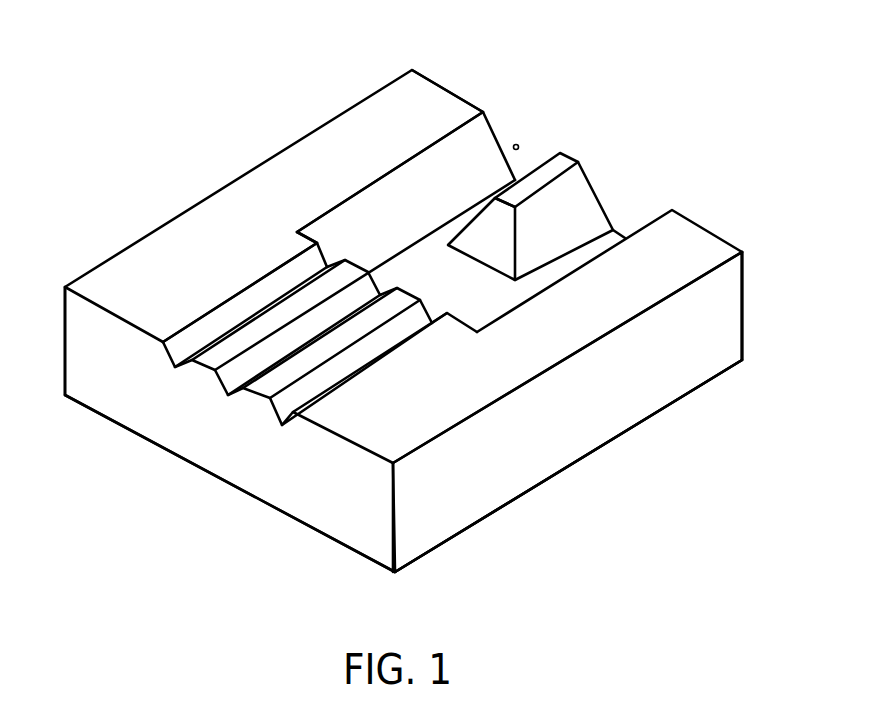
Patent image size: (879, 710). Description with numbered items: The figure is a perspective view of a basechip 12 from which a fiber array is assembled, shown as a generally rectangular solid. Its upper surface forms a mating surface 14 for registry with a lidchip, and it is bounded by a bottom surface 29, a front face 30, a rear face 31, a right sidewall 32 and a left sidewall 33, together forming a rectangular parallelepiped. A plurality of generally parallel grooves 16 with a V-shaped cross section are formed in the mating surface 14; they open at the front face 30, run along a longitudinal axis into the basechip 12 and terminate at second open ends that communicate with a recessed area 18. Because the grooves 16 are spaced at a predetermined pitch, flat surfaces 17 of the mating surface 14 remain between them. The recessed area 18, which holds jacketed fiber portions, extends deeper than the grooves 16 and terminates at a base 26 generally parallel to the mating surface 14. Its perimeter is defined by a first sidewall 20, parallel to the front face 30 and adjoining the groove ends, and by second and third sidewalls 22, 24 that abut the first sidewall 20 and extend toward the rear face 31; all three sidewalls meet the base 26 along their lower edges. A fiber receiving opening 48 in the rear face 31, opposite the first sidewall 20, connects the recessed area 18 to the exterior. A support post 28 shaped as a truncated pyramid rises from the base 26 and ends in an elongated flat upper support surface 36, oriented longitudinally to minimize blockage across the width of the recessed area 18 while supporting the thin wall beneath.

The basechip 12 is at (349, 60).
The mating surface 14 is at (432, 89).
The grooves 16 is at (323, 367).
The flat surfaces 17 is at (212, 356).
The recessed area 18 is at (462, 289).
The first sidewall 20 is at (311, 226).
The second sidewall 22 is at (485, 133).
The third sidewall 24 is at (653, 213).
The base 26 is at (608, 240).
The support post 28 is at (588, 187).
The bottom surface 29 is at (583, 457).
The front face 30 is at (281, 485).
The rear face 31 is at (745, 315).
The right sidewall 32 is at (660, 392).
The left sidewall 33 is at (62, 325).
The upper support surface 36 is at (565, 160).
The fiber receiving opening 48 is at (520, 143).